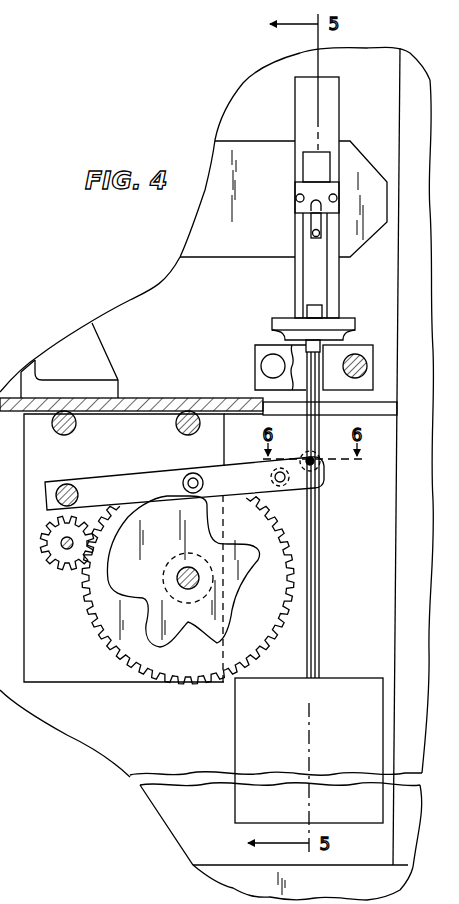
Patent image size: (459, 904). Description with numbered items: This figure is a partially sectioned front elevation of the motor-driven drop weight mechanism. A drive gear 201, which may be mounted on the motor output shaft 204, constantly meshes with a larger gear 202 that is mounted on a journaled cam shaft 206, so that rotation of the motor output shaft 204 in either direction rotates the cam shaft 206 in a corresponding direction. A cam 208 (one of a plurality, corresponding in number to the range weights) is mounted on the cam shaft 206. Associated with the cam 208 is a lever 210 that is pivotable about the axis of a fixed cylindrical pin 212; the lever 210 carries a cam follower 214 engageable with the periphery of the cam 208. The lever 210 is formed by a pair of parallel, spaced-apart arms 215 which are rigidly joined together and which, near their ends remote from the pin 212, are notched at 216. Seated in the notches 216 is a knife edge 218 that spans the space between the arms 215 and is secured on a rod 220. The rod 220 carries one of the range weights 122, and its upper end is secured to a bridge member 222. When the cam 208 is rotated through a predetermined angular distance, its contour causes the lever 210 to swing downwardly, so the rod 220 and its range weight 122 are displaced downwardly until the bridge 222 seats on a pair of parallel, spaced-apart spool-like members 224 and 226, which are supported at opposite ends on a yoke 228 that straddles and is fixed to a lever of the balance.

The range weight 122 is at (235, 726).
The drive gear 201 is at (49, 563).
The larger gear 202 is at (296, 560).
The motor output shaft 204 is at (66, 550).
The cam shaft 206 is at (200, 596).
The cam 208 is at (232, 597).
The lever 210 is at (90, 482).
The fixed cylindrical pin 212 is at (67, 486).
The cam follower 214 is at (191, 473).
The arm 215 is at (240, 467).
The notch 216 is at (313, 459).
The knife edge 218 is at (309, 459).
The rod 220 is at (322, 497).
The bridge member 222 is at (346, 318).
The spool-like member 224 is at (255, 362).
The spool-like member 226 is at (361, 352).
The yoke 228 is at (344, 96).